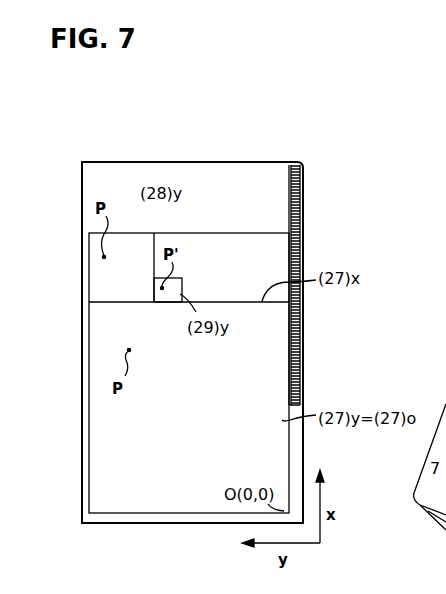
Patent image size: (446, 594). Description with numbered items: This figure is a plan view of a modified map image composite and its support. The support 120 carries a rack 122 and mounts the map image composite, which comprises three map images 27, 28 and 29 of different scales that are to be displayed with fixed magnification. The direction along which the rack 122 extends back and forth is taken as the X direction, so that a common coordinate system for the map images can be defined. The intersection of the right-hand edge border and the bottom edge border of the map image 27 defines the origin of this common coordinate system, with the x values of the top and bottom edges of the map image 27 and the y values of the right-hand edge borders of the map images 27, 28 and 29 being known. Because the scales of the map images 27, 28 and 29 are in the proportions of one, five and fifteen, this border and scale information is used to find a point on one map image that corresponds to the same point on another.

The support 120 is at (242, 160).
The rack 122 is at (300, 207).
The map image 27 is at (104, 414).
The map image 28 is at (101, 279).
The map image 29 is at (185, 299).